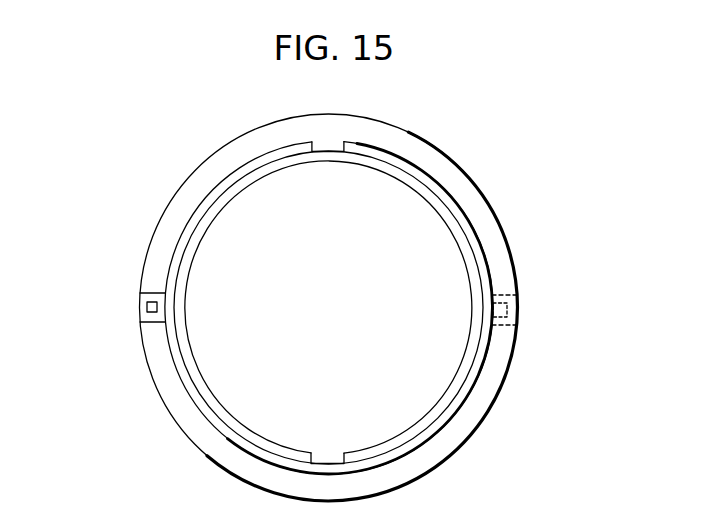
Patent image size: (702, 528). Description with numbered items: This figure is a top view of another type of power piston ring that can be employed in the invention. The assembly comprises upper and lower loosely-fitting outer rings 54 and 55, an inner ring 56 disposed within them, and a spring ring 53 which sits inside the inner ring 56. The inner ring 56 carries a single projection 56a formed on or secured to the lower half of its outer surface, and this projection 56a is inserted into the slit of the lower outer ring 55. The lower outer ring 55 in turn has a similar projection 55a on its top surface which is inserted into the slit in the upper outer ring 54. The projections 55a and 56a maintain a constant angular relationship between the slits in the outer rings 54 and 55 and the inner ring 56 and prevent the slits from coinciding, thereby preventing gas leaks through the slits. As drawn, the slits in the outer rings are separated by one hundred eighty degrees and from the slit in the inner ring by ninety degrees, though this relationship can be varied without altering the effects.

The spring ring 53 is at (458, 387).
The upper outer ring 54 is at (418, 465).
The lower outer ring 55 is at (140, 318).
The projection 55a is at (147, 307).
The inner ring 56 is at (428, 183).
The projection 56a is at (507, 308).